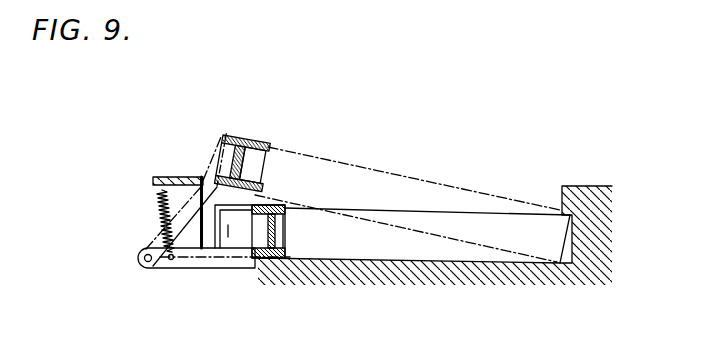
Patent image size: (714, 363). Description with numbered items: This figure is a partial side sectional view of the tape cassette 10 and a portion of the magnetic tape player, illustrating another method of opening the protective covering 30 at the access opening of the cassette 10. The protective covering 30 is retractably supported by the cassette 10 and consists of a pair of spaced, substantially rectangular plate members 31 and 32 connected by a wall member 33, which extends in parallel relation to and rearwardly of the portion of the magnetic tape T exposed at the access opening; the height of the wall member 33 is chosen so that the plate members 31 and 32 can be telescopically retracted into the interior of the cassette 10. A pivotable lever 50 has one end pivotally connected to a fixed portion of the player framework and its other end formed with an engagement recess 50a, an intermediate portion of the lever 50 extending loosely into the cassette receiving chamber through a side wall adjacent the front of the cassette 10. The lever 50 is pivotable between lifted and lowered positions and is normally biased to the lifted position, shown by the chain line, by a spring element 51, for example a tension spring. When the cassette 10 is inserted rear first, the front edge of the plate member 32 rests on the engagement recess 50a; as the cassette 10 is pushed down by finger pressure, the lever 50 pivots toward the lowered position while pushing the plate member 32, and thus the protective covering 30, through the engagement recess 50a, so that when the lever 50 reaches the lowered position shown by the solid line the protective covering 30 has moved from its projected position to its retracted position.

The cassette 10 is at (408, 172).
The protective covering 30 is at (318, 131).
The plate member 31 is at (254, 146).
The plate member 32 is at (263, 183).
The wall member 33 is at (257, 160).
The pivotable lever 50 is at (186, 222).
The engagement recess 50a is at (212, 178).
The spring element 51 is at (158, 213).
The magnetic tape T is at (198, 135).